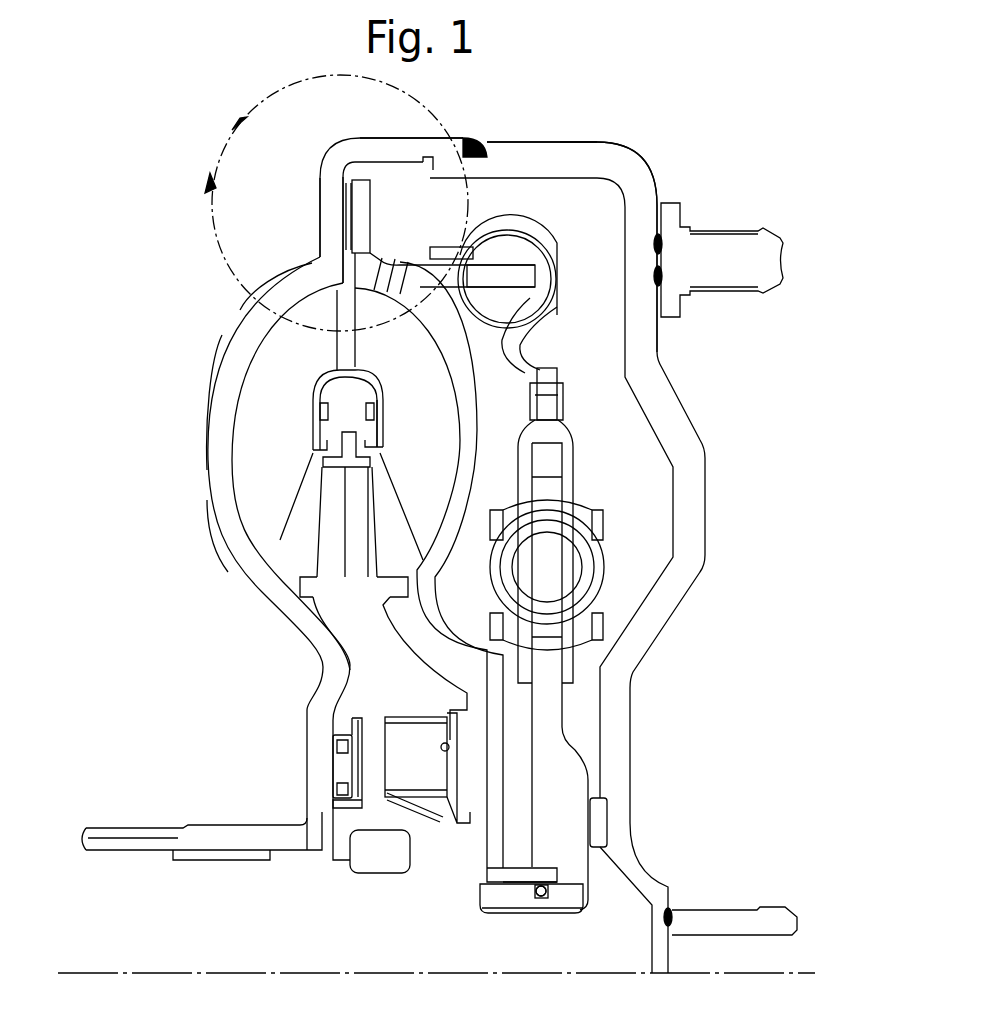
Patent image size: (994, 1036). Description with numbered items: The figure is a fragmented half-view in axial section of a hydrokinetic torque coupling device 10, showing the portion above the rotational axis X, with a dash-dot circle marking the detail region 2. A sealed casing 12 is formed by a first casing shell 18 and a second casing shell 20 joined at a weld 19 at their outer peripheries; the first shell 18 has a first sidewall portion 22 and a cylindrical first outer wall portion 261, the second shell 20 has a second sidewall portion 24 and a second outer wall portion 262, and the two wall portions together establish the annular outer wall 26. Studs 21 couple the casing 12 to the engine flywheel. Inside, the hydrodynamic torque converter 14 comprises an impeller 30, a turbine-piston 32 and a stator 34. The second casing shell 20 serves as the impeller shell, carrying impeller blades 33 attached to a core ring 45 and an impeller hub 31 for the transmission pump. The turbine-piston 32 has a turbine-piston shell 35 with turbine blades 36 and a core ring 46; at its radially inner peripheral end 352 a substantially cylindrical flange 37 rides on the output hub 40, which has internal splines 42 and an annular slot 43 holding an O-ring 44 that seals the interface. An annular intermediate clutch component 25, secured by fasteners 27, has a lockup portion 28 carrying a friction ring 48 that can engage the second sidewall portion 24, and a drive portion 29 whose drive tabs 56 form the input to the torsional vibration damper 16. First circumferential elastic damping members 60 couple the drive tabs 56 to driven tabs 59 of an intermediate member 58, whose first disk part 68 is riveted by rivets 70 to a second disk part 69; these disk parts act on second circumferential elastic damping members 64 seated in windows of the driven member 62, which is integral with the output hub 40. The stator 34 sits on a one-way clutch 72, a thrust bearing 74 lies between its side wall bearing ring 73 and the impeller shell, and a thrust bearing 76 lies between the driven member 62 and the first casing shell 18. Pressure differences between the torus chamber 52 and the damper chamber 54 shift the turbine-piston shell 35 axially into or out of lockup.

The detail view circle 2 is at (336, 203).
The hydrokinetic torque coupling device 10 is at (680, 157).
The sealed casing 12 is at (613, 520).
The hydrodynamic torque converter 14 is at (292, 562).
The torsional vibration damper 16 is at (555, 343).
The first casing shell 18 is at (705, 497).
The weld 19 is at (477, 137).
The second casing shell 20 is at (399, 216).
The studs 21 is at (737, 243).
The first sidewall portion 22 is at (640, 273).
The second sidewall portion 24 is at (333, 238).
The annular intermediate clutch component 25 is at (420, 230).
The annular outer wall 26 is at (520, 130).
The first outer wall portion 261 is at (577, 145).
The second outer wall portion 262 is at (378, 150).
The fasteners 27 is at (407, 257).
The lockup portion 28 is at (362, 195).
The drive portion 29 is at (427, 272).
The impeller 30 is at (235, 480).
The impeller hub 31 is at (219, 838).
The turbine-piston 32 is at (450, 482).
The impeller blades 33 is at (249, 519).
The stator 34 is at (340, 553).
The turbine-piston shell 35 is at (467, 405).
The radially inner peripheral end 352 is at (545, 858).
The turbine blades 36 is at (411, 519).
The substantially cylindrical flange 37 is at (490, 873).
The output hub 40 is at (500, 897).
The internal splines 42 is at (565, 915).
The annular slot 43 is at (540, 897).
The O-ring 44 is at (541, 891).
The core ring 45 is at (320, 385).
The core ring 46 is at (378, 387).
The friction ring 48 is at (349, 220).
The torus chamber 52 is at (330, 430).
The damper chamber 54 is at (571, 572).
The drive tabs 56 is at (513, 273).
The intermediate member 58 is at (537, 378).
The driven tabs 59 is at (437, 253).
The first circumferential elastic damping members 60 is at (540, 238).
The driven member 62 is at (563, 757).
The second circumferential elastic damping members 64 is at (593, 562).
The first disk part 68 is at (525, 450).
The second disk part 69 is at (568, 455).
The rivets 70 is at (563, 407).
The one-way clutch 72 is at (417, 740).
The side wall bearing ring 73 is at (358, 722).
The thrust bearing 74 is at (343, 767).
The thrust bearing 76 is at (600, 825).
The rotational axis X is at (82, 970).